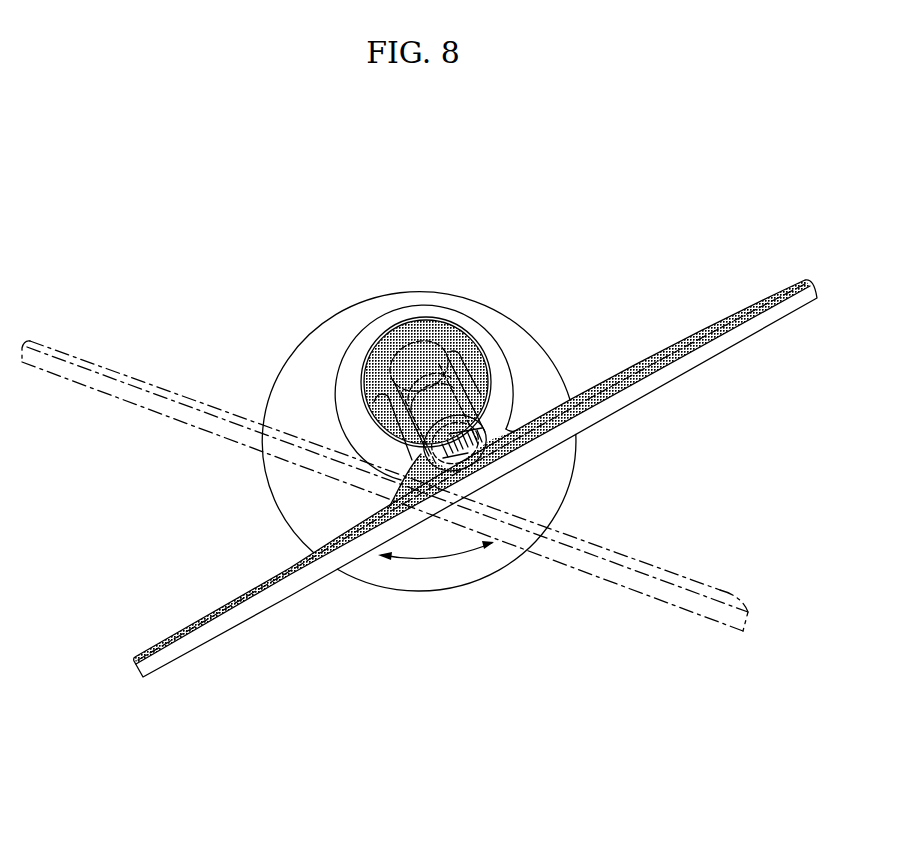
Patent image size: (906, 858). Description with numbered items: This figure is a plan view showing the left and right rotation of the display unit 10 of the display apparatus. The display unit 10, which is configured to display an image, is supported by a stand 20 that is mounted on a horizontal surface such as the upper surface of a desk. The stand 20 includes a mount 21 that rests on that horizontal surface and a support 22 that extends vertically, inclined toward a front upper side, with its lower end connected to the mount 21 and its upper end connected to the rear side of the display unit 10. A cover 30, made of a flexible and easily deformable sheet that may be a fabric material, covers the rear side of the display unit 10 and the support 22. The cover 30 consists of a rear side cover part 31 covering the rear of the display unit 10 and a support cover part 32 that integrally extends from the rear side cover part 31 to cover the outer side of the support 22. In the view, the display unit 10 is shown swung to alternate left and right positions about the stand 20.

The display unit 10 is at (273, 615).
The stand 20 is at (512, 309).
The mount 21 is at (447, 300).
The support 22 is at (421, 390).
The cover 30 is at (310, 534).
The rear side cover part 31 is at (208, 612).
The support cover part 32 is at (382, 440).